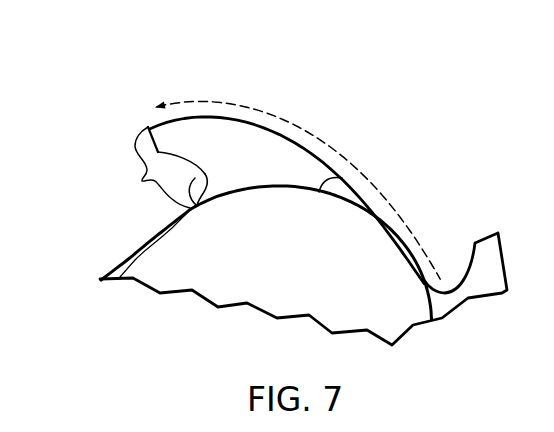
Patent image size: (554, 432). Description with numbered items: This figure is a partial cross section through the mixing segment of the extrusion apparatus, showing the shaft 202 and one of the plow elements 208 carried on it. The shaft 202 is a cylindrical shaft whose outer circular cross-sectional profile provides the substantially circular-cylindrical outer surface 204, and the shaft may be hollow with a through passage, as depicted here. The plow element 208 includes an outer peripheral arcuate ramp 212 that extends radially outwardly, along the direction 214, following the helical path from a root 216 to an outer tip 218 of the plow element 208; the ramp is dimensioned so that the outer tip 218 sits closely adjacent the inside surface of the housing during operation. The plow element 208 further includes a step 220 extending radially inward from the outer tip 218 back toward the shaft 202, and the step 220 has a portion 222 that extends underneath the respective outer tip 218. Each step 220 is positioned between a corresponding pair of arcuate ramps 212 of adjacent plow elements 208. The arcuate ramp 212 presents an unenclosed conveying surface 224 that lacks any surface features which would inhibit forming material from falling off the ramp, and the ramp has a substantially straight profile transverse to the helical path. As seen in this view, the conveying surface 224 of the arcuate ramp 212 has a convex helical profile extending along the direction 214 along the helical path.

The shaft 202 is at (343, 177).
The outer surface 204 is at (367, 208).
The plow element 208 is at (237, 94).
The arcuate ramp 212 is at (300, 141).
The direction 214 is at (192, 100).
The root 216 is at (208, 178).
The outer tip 218 is at (148, 126).
The step 220 is at (142, 180).
The portion 222 is at (196, 213).
The conveying surface 224 is at (268, 125).